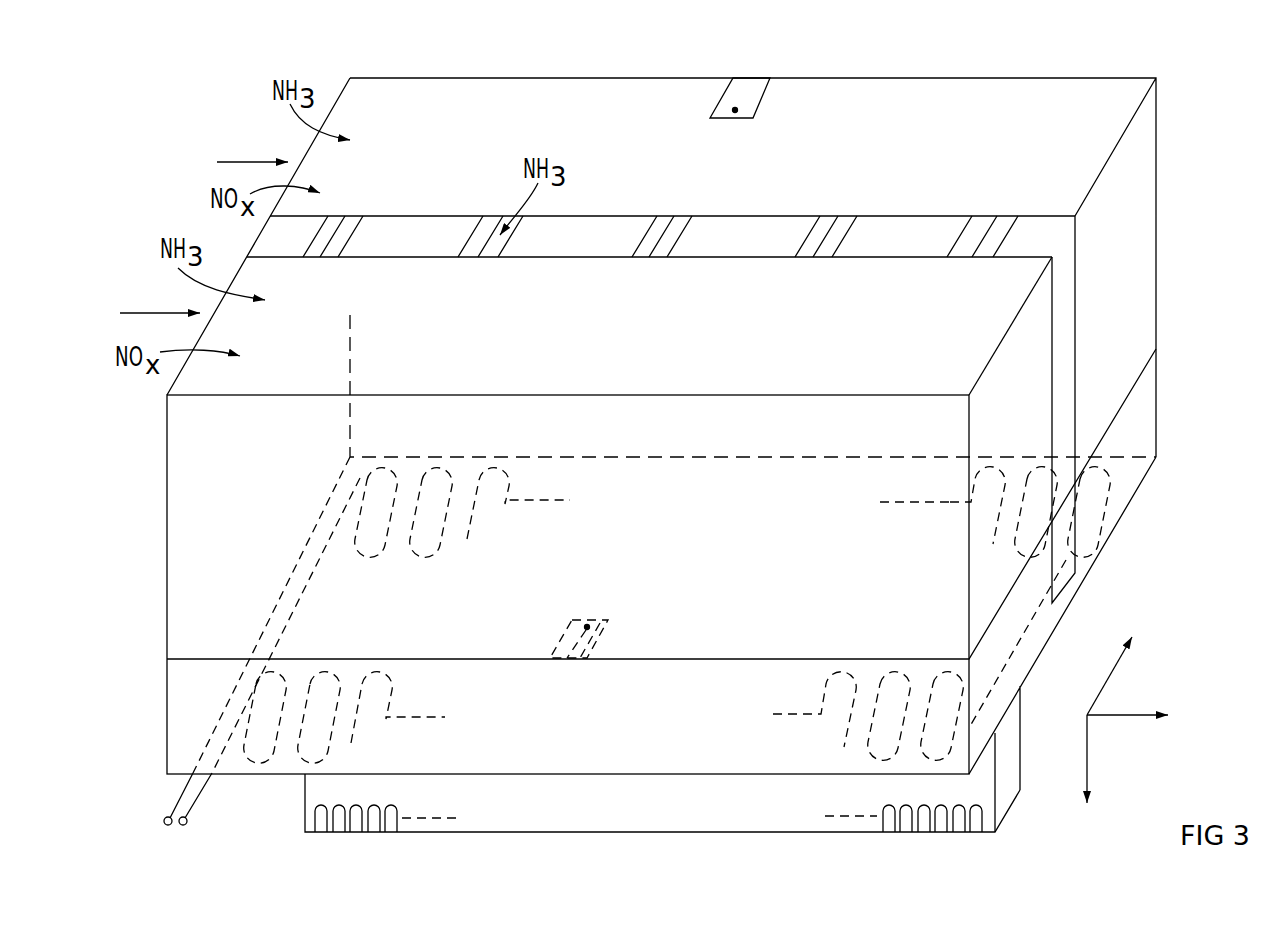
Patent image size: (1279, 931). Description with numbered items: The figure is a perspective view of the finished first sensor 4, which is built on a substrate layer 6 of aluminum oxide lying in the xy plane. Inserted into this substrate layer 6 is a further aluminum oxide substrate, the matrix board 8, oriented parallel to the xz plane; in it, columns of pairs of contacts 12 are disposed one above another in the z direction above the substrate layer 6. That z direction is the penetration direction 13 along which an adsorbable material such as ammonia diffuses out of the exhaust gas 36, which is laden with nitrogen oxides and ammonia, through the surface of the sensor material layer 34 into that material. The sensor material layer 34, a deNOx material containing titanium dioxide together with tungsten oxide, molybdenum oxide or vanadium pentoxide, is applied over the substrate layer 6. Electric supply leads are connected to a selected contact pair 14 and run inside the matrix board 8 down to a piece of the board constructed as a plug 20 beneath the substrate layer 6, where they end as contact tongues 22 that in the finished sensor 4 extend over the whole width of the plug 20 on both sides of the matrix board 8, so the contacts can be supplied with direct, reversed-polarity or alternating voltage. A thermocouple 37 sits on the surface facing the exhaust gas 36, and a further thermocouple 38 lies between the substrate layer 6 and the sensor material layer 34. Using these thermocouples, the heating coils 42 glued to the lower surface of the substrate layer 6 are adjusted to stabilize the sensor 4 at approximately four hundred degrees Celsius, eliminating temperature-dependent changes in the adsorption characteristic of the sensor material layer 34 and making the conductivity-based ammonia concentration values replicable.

The first sensor 4 is at (233, 240).
The substrate layer 6 is at (668, 750).
The matrix board 8 is at (590, 232).
The pairs of contacts 12 is at (493, 215).
The penetration direction 13 is at (1088, 753).
The selected contact pair 14 is at (985, 212).
The plug 20 is at (540, 812).
The contact tongues 22 is at (340, 832).
The sensor material layer 34 is at (1033, 105).
The exhaust gas 36 is at (258, 162).
The thermocouple 37 is at (735, 110).
The further thermocouple 38 is at (587, 627).
The heating coils 42 is at (330, 672).